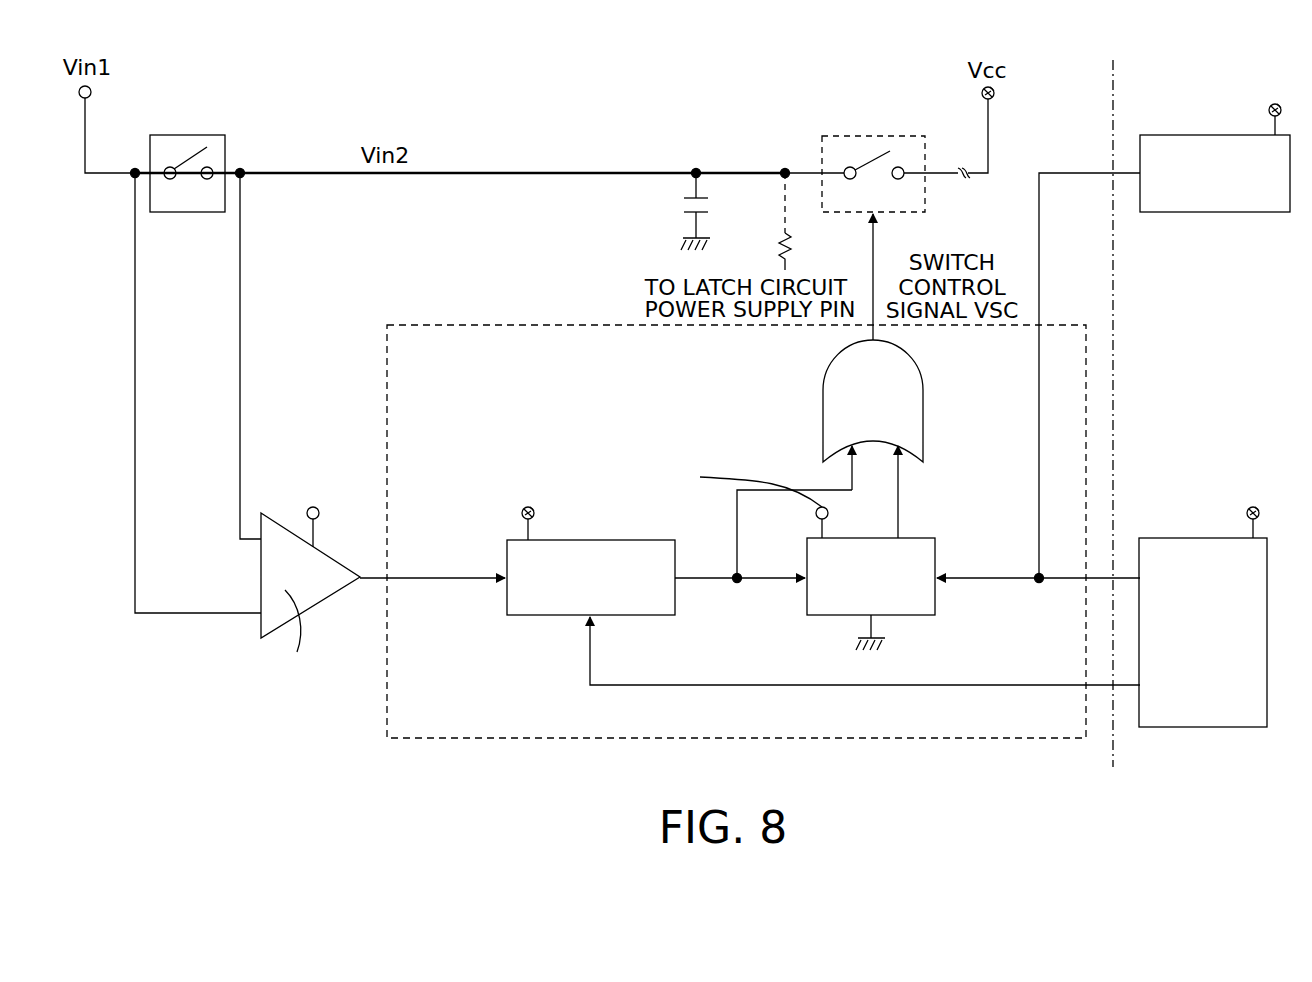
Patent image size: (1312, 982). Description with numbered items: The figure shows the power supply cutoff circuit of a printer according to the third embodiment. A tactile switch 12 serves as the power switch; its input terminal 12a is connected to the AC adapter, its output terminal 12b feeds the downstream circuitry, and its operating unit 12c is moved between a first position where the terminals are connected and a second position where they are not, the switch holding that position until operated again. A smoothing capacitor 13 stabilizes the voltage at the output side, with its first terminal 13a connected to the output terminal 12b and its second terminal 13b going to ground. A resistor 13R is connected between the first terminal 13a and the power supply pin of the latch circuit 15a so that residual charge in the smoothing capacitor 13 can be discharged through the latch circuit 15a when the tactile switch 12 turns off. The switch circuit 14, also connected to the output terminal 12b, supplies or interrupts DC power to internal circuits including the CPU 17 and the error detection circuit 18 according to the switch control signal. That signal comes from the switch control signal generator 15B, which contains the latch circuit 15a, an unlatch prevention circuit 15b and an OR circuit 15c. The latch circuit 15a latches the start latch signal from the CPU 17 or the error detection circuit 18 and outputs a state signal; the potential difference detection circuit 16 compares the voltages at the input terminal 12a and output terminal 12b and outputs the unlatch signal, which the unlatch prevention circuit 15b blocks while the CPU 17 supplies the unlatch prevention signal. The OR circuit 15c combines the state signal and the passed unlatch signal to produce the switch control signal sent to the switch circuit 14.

The tactile switch 12 is at (203, 160).
The input terminal 12a is at (167, 167).
The output terminal 12b is at (210, 166).
The operating unit 12c is at (190, 158).
The smoothing capacitor 13 is at (685, 224).
The first terminal 13a is at (690, 186).
The second terminal 13b is at (690, 222).
The resistor 13R is at (812, 221).
The switch circuit 14 is at (822, 146).
The switch control signal generator 15B is at (458, 324).
The latch circuit 15a is at (937, 556).
The unlatch prevention circuit 15b is at (675, 556).
The OR circuit 15c is at (923, 408).
The potential difference detection circuit 16 is at (261, 576).
The CPU 17 is at (1192, 538).
The error detection circuit 18 is at (1192, 135).